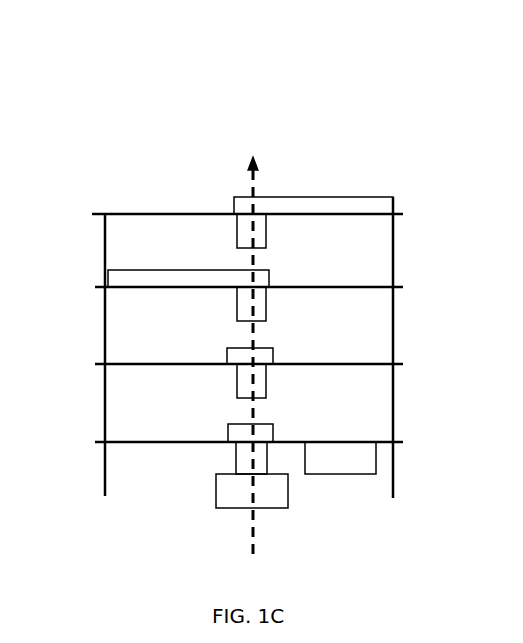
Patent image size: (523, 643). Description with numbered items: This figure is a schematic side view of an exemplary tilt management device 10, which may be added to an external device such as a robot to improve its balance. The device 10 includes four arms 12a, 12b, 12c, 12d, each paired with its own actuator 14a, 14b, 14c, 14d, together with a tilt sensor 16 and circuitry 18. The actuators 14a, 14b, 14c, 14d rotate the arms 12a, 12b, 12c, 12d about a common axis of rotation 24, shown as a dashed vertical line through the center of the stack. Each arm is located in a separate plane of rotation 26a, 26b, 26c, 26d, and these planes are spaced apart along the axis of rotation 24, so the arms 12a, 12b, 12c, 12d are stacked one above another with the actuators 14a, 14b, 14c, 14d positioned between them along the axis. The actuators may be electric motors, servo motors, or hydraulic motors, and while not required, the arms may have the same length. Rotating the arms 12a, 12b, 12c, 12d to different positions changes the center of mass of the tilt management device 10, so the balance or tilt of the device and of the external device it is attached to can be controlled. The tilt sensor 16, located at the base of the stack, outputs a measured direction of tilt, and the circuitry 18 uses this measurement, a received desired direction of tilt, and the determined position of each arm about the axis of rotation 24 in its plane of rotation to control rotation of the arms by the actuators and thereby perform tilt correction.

The tilt management device 10 is at (130, 138).
The arm 12a is at (375, 207).
The arm 12b is at (137, 273).
The arm 12c is at (266, 352).
The arm 12d is at (266, 427).
The actuator 14a is at (240, 237).
The actuator 14b is at (238, 301).
The actuator 14c is at (238, 378).
The actuator 14d is at (243, 452).
The tilt sensor 16 is at (227, 490).
The circuitry 18 is at (365, 462).
The axis of rotation 24 is at (258, 160).
The plane of rotation 26a is at (96, 212).
The plane of rotation 26b is at (404, 283).
The plane of rotation 26c is at (404, 360).
The plane of rotation 26d is at (404, 438).